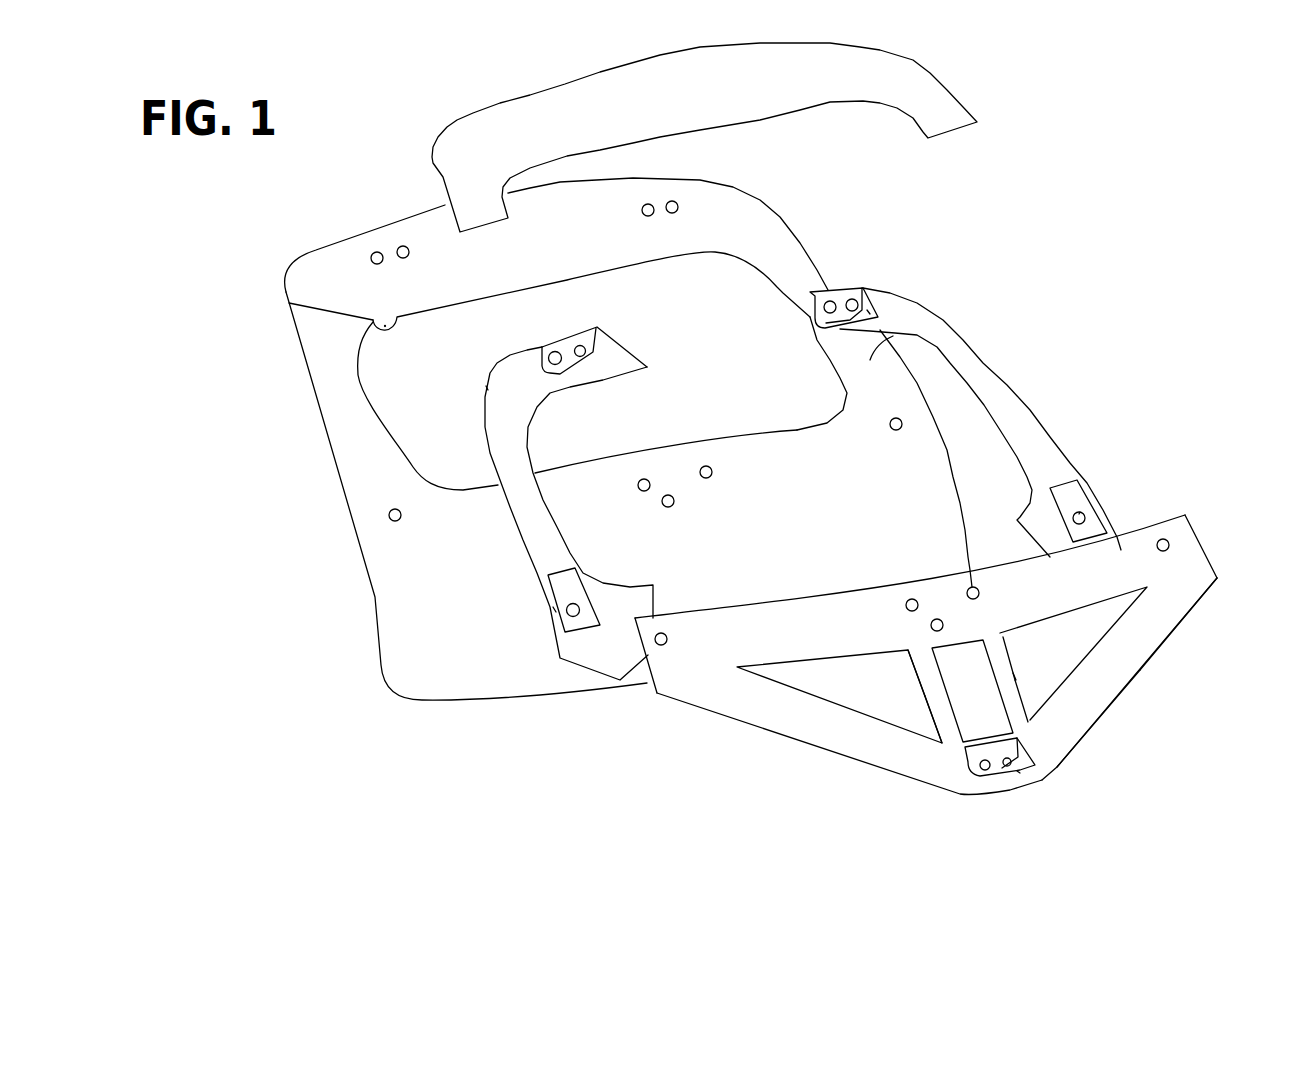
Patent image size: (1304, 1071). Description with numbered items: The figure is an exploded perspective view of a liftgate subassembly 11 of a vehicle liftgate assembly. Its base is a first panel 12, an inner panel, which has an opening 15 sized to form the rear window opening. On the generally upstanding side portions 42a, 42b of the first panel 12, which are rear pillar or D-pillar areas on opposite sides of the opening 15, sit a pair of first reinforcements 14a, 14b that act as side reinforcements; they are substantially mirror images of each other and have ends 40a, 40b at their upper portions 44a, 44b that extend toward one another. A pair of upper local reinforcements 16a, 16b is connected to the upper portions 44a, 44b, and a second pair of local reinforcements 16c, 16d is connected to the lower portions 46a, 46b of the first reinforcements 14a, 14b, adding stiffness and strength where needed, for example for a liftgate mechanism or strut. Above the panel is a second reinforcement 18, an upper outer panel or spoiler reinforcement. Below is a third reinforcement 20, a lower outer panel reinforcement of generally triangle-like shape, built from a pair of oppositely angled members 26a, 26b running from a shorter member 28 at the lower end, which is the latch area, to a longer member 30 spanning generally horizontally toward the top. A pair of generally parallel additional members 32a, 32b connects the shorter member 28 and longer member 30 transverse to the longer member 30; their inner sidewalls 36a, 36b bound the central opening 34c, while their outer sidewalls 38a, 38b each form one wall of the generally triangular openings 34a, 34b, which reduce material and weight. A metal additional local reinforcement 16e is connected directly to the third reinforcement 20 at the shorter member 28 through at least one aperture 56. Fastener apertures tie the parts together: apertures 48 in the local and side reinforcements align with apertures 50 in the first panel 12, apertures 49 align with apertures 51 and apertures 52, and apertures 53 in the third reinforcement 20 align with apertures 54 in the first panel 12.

The liftgate subassembly 11 is at (1116, 81).
The first panel 12 is at (587, 439).
The first reinforcement 14a is at (459, 513).
The first reinforcement 14b is at (997, 422).
The opening 15 is at (291, 284).
The local reinforcement 16a is at (371, 413).
The local reinforcement 16b is at (951, 277).
The local reinforcement 16c is at (433, 626).
The local reinforcement 16d is at (1139, 464).
The additional local reinforcement 16e is at (1091, 787).
The second reinforcement 18 is at (761, 137).
The third reinforcement 20 is at (1159, 679).
The member 26a is at (849, 765).
The member 26b is at (1209, 667).
The shorter member 28 is at (1000, 814).
The longer member 30 is at (926, 604).
The additional member 32a is at (917, 768).
The additional member 32b is at (1148, 703).
The opening 34a is at (889, 724).
The opening 34b is at (1144, 653).
The additional opening 34c is at (1104, 720).
The inner sidewall 36a is at (972, 676).
The inner sidewall 36b is at (1039, 630).
The outer sidewall 38a is at (860, 622).
The outer sidewall 38b is at (1043, 654).
The end 40a is at (666, 377).
The end 40b is at (773, 368).
The side portion 42a is at (318, 406).
The side portion 42b is at (945, 435).
The upper portion 44a is at (556, 340).
The upper portion 44b is at (880, 264).
The lower portion 46a is at (520, 660).
The lower portion 46b is at (1168, 499).
The apertures 48 is at (755, 295).
The apertures 49 is at (877, 605).
The apertures 50 is at (555, 197).
The apertures 51 is at (673, 466).
The apertures 52 is at (957, 636).
The apertures 53 is at (942, 567).
The apertures 54 is at (675, 441).
The aperture 56 is at (1034, 809).